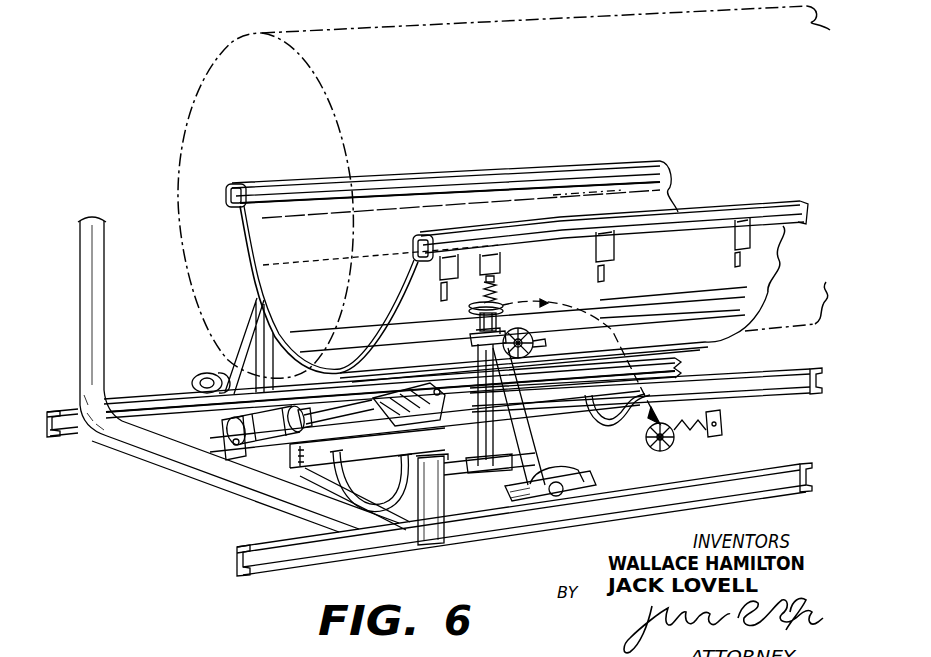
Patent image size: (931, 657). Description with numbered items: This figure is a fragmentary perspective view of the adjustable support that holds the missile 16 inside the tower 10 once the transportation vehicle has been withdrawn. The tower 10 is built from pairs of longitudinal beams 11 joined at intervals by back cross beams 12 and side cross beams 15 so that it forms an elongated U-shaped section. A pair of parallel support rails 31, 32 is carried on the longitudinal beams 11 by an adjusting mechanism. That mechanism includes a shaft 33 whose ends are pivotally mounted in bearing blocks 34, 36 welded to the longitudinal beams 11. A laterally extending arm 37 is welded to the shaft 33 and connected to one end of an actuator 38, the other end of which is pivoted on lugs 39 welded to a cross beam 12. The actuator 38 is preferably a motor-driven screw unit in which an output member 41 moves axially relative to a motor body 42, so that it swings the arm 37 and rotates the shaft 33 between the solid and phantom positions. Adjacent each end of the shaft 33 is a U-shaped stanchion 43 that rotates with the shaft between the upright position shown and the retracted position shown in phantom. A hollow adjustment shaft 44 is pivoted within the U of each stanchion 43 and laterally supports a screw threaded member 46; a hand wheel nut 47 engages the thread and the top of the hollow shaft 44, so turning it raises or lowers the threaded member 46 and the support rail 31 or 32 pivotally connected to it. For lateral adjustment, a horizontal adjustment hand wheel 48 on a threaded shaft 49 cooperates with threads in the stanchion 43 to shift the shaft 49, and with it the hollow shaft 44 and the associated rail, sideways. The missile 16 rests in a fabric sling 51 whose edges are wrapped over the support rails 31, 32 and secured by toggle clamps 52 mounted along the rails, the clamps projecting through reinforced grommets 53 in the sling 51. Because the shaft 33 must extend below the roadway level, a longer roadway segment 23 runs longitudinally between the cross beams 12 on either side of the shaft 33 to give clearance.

The tower 10 is at (493, 543).
The longitudinal beams 11 is at (142, 396).
The back cross beams 12 is at (300, 508).
The side cross beams 15 is at (103, 286).
The missile 16 is at (210, 66).
The roadway segment 23 is at (375, 458).
The support rail 31 is at (418, 254).
The support rail 32 is at (238, 212).
The shaft 33 is at (495, 478).
The bearing block 34 is at (582, 487).
The bearing block 36 is at (211, 375).
The arm 37 is at (335, 432).
The actuator 38 is at (305, 440).
The lugs 39 is at (240, 462).
The output member 41 is at (302, 410).
The motor body 42 is at (265, 426).
The U-shaped stanchion 43 is at (262, 333).
The hollow adjustment shaft 44 is at (497, 322).
The screw threaded member 46 is at (492, 293).
The hand wheel nut 47 is at (497, 305).
The horizontal adjustment hand wheel 48 is at (533, 329).
The threaded shaft 49 is at (478, 339).
The sling 51 is at (398, 328).
The toggle clamps 52 is at (456, 288).
The reinforced grommets 53 is at (465, 242).